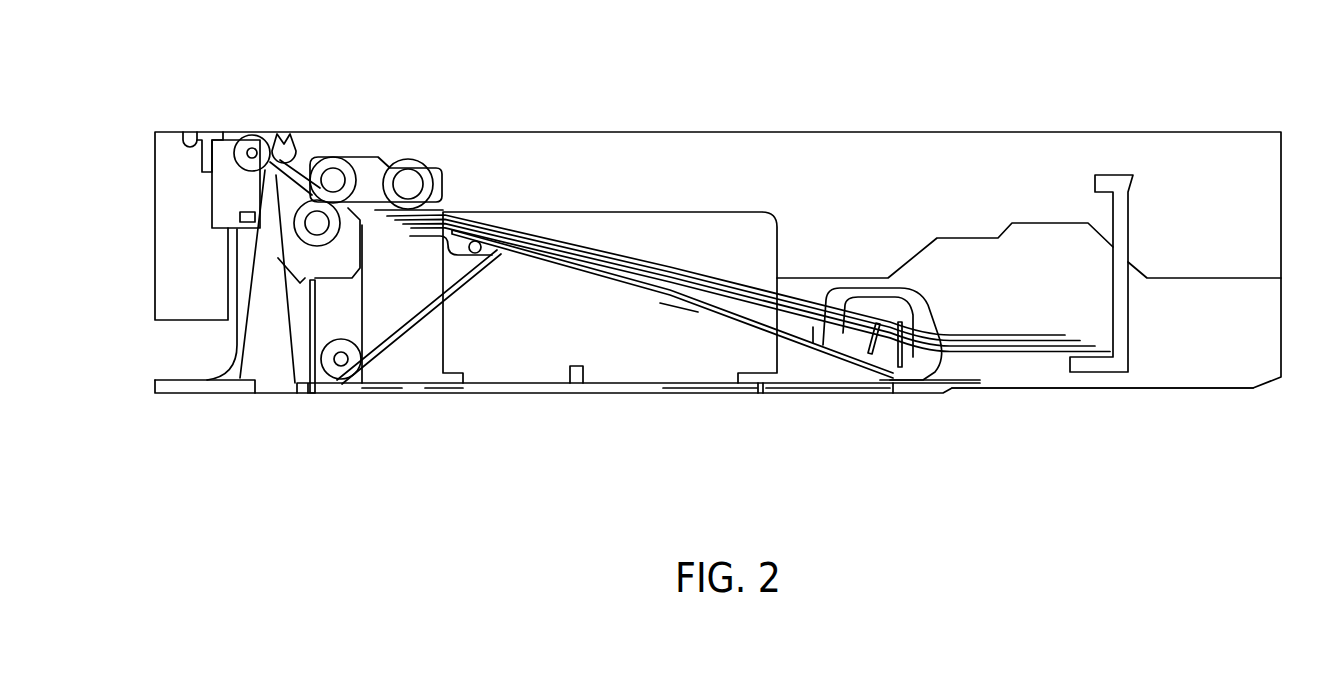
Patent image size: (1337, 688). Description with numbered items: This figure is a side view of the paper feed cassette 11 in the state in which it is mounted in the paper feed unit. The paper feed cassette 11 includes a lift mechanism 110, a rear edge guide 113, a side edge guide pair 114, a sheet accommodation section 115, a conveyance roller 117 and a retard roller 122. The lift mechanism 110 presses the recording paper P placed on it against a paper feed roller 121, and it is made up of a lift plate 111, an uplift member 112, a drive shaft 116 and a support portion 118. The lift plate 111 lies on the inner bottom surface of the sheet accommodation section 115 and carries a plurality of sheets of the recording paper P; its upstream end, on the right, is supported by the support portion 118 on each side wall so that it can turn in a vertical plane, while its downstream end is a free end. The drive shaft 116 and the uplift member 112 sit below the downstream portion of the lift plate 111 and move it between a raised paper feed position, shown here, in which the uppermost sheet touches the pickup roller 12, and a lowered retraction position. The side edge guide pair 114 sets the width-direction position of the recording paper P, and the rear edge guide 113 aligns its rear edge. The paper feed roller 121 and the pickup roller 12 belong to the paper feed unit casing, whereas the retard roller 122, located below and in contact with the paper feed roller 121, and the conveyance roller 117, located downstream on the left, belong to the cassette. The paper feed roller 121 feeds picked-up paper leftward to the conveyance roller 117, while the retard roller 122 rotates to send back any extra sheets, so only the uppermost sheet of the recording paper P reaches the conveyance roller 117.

The paper feed cassette 11 is at (141, 166).
The conveyance roller 117 is at (253, 133).
The paper feed roller 121 is at (335, 157).
The pickup roller 12 is at (411, 159).
The retard roller 122 is at (348, 228).
The drive shaft 116 is at (330, 384).
The uplift member 112 is at (392, 340).
The lift mechanism 110 is at (516, 278).
The recording paper P is at (605, 250).
The lift plate 111 is at (683, 312).
The side edge guide pair 114 is at (728, 212).
The support portion 118 is at (880, 290).
The rear edge guide 113 is at (1105, 175).
The sheet accommodation section 115 is at (1013, 370).